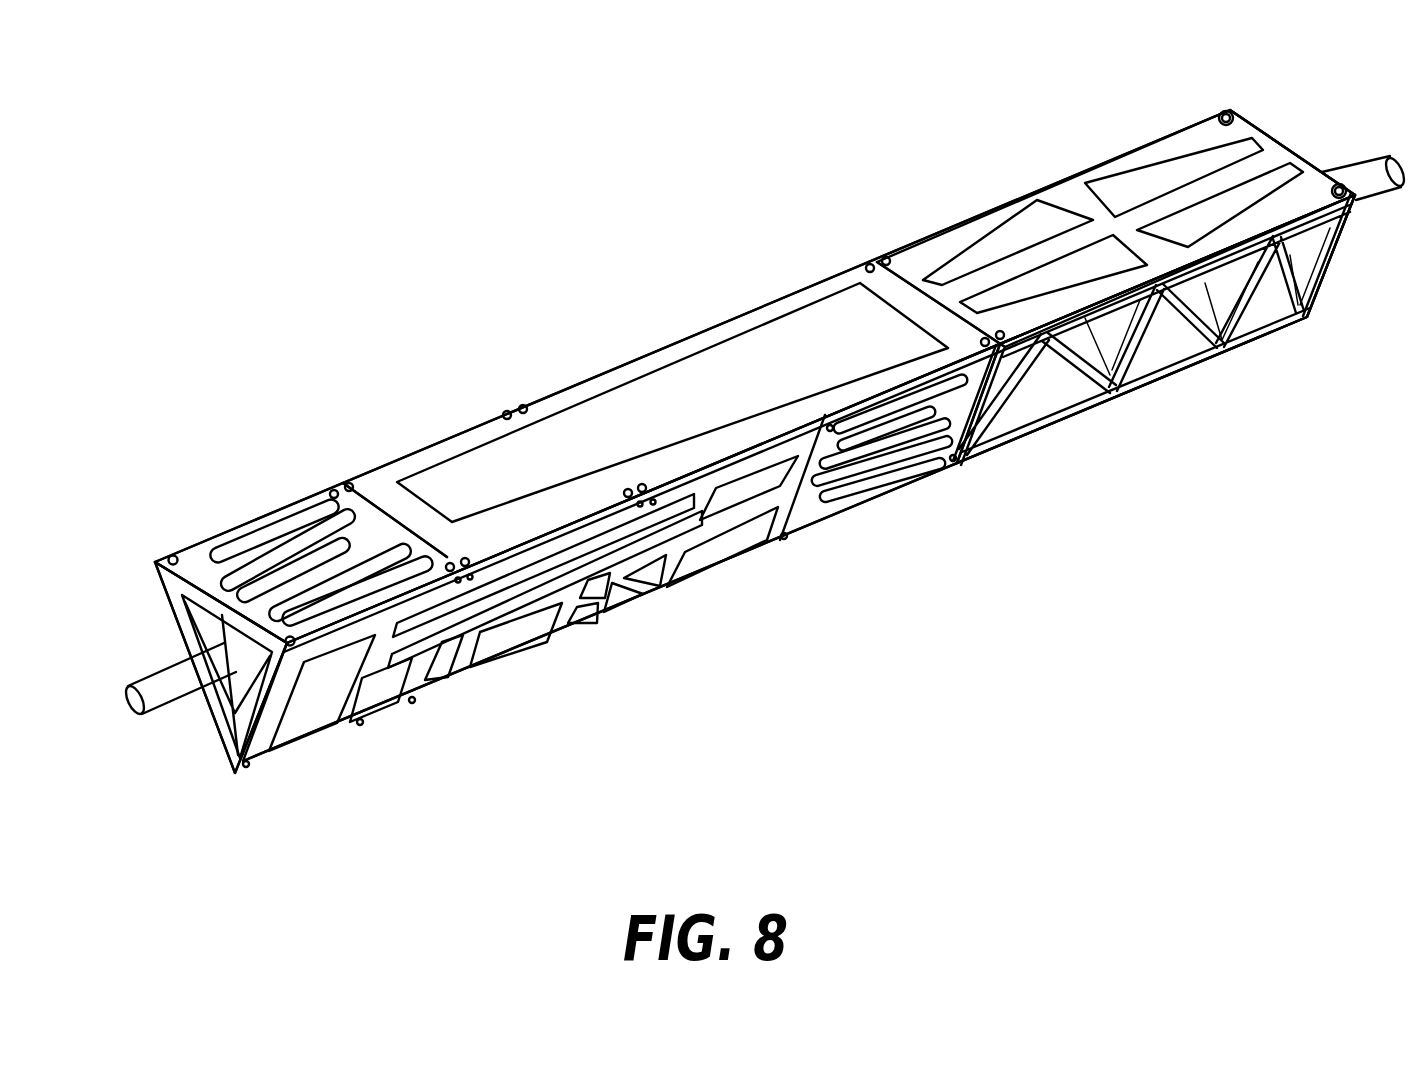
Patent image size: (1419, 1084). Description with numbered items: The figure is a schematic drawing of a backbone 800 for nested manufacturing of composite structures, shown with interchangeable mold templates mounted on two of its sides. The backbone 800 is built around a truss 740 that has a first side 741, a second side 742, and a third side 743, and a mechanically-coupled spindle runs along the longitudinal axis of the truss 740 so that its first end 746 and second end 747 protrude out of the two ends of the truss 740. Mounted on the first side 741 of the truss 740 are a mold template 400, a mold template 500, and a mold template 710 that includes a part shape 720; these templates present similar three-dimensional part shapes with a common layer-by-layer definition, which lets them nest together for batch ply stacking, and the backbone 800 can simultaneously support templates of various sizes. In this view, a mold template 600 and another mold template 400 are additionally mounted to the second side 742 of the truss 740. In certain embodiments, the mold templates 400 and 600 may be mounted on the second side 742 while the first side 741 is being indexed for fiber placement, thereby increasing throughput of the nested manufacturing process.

The backbone 800 is at (415, 200).
The mold template 500 is at (1205, 135).
The second end 747 is at (1368, 172).
The first side 741 is at (295, 434).
The mold template 710 is at (372, 488).
The part shape 720 is at (596, 430).
The mold template 400 is at (196, 560).
The truss 740 is at (1170, 385).
The first end 746 is at (137, 690).
The second side 742 is at (483, 693).
The third side 743 is at (196, 767).
The mold template 600 is at (345, 732).